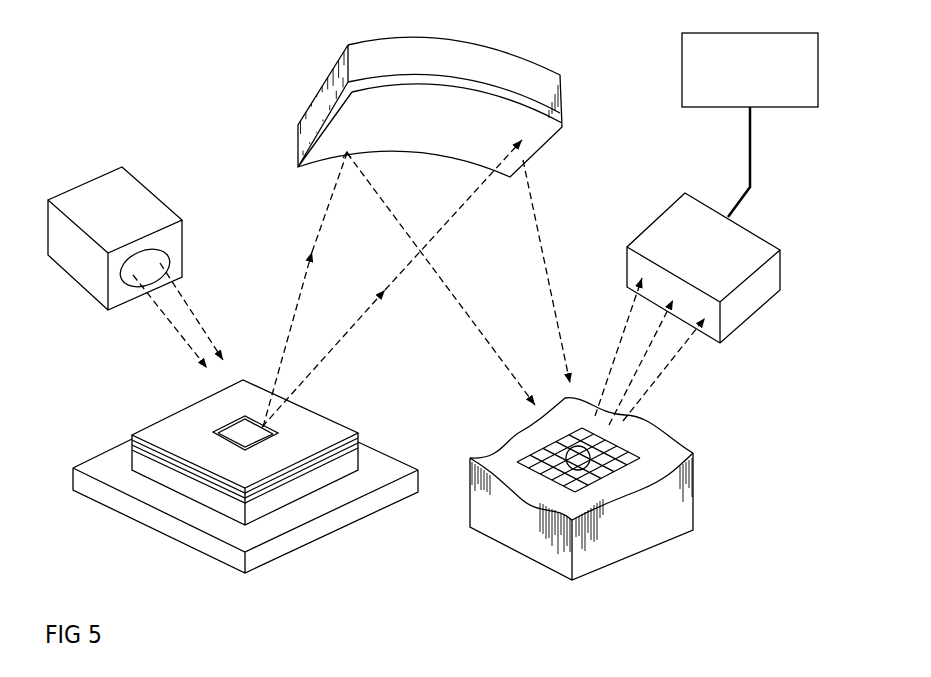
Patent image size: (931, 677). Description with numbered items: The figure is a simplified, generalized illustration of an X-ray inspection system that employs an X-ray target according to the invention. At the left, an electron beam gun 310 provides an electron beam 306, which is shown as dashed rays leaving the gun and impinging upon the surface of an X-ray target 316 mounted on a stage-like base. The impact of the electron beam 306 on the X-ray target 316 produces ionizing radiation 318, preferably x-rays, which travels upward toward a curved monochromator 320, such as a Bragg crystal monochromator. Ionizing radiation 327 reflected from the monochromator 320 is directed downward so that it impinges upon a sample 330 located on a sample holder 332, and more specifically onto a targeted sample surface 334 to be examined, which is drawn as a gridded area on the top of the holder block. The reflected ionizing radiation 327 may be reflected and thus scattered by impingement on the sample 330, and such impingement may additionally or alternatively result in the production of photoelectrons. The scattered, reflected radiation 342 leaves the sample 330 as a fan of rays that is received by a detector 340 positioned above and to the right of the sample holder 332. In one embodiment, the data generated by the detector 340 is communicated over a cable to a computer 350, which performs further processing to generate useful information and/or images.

The electron beam 306 is at (193, 312).
The electron beam gun 310 is at (127, 182).
The X-ray target 316 is at (366, 417).
The ionizing radiation 318 is at (357, 318).
The monochromator 320 is at (560, 47).
The reflected ionizing radiation 327 is at (552, 270).
The sample 330 is at (557, 443).
The sample holder 332 is at (643, 550).
The targeted sample surface 334 is at (623, 442).
The detector 340 is at (762, 240).
The reflected radiation 342 is at (668, 362).
The computer 350 is at (797, 32).